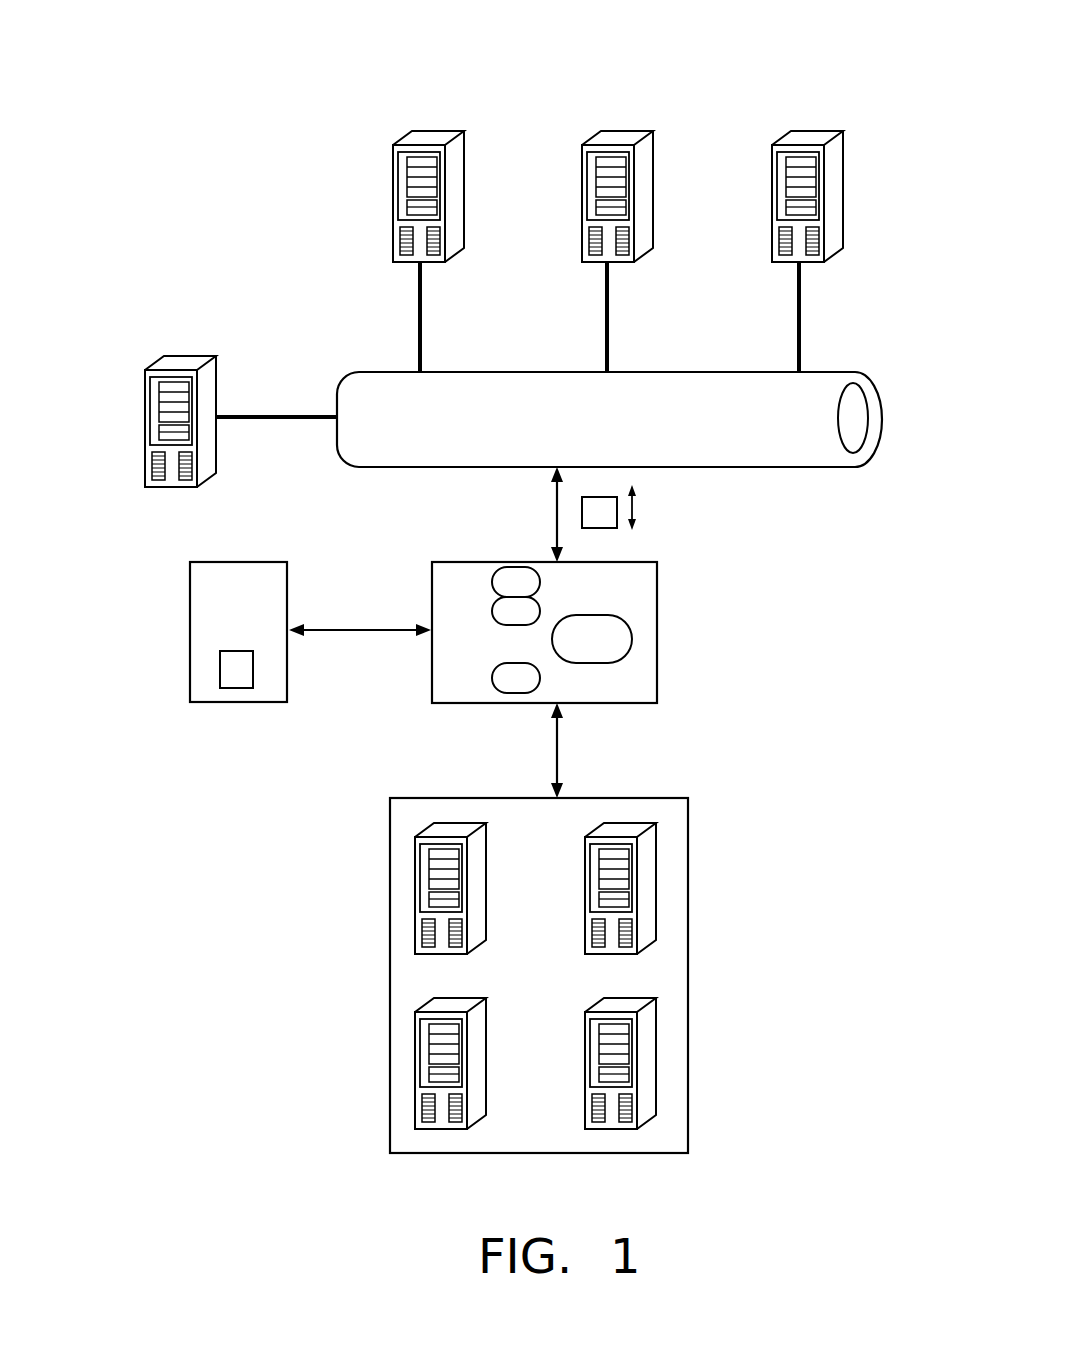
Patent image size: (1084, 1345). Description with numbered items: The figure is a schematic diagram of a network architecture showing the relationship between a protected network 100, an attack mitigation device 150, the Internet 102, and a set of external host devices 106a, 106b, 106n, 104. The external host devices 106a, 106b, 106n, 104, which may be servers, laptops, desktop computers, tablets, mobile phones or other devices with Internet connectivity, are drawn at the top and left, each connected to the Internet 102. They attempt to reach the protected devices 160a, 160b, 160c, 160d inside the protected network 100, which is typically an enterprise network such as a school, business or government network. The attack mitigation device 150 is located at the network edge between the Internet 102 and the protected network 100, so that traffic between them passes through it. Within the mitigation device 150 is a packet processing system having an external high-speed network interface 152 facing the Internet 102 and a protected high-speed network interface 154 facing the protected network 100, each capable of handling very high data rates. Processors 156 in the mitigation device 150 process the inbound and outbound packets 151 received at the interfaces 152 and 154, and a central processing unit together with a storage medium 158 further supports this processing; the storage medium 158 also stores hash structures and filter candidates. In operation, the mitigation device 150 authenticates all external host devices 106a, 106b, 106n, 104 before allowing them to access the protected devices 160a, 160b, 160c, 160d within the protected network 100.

The protected network 100 is at (678, 787).
The Internet 102 is at (842, 364).
The external host device 104 is at (188, 357).
The external host device 106a is at (440, 131).
The external host device 106b is at (627, 131).
The external host device 106n is at (821, 131).
The attack mitigation device 150 is at (642, 550).
The inbound and outbound packets 151 is at (598, 497).
The external high-speed network interface 152 is at (522, 567).
The protected high-speed network interface 154 is at (511, 693).
The processors 156 is at (492, 607).
The storage medium 158 is at (190, 597).
The protected device 160a is at (415, 887).
The protected device 160b is at (415, 1068).
The protected device 160c is at (656, 873).
The protected device 160d is at (654, 1053).